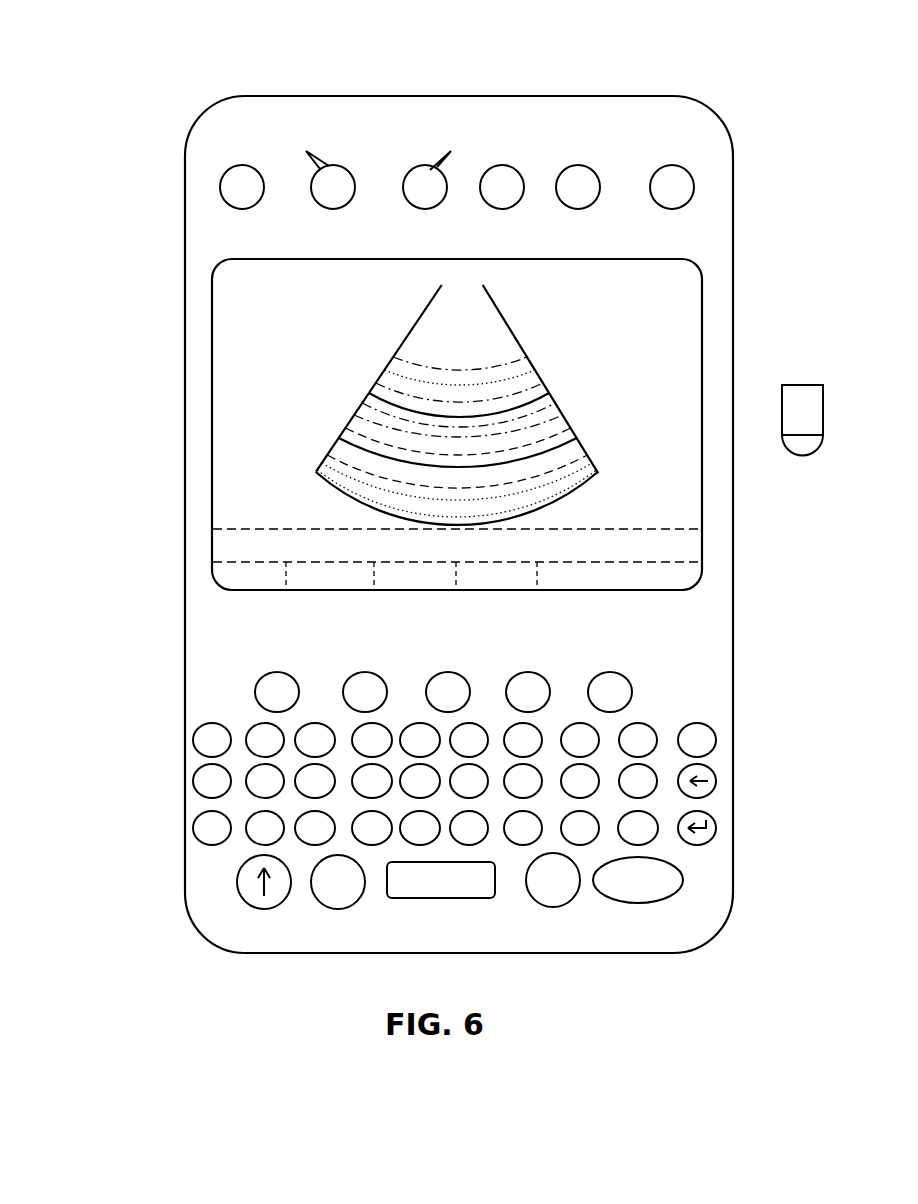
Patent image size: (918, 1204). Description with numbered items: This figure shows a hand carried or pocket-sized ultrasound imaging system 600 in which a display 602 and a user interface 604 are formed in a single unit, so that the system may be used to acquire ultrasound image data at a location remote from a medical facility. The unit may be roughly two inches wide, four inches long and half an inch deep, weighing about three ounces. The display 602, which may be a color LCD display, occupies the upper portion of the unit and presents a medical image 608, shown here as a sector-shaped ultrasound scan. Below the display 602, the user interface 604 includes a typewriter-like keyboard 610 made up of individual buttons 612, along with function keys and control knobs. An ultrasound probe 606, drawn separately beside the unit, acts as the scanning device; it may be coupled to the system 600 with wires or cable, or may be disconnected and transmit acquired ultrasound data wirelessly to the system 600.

The ultrasound imaging system 600 is at (755, 63).
The display 602 is at (163, 265).
The user interface 604 is at (770, 527).
The ultrasound probe 606 is at (820, 385).
The medical image 608 is at (533, 370).
The keyboard 610 is at (163, 725).
The buttons 612 is at (214, 722).